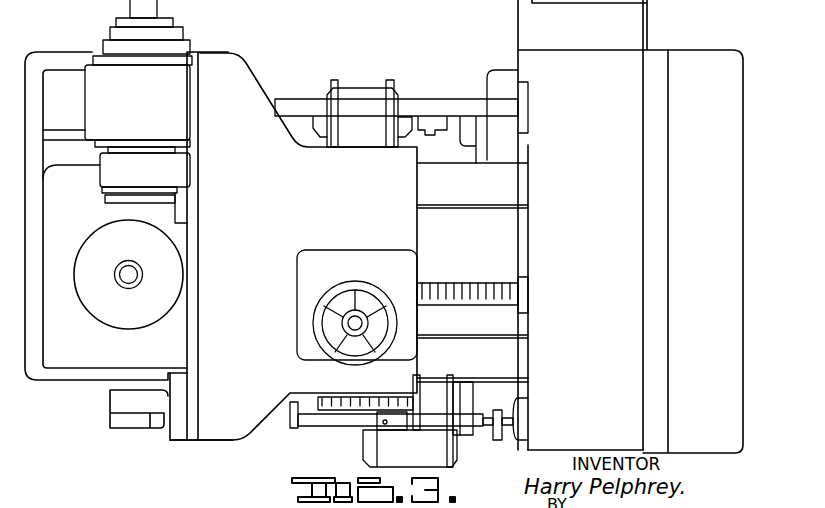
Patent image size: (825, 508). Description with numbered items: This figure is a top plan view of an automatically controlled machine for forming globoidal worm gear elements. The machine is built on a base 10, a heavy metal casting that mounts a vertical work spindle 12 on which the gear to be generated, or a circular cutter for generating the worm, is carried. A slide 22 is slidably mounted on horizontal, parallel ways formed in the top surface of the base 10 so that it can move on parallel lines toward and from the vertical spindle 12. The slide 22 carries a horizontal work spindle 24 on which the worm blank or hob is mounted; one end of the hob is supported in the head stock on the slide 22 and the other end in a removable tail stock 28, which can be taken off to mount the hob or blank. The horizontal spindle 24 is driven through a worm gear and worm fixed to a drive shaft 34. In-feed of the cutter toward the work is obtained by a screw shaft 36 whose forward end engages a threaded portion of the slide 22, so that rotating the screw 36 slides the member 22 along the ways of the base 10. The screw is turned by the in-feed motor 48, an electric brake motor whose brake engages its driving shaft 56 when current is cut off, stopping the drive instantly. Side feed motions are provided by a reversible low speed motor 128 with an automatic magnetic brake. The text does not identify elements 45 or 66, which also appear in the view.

The base 10 is at (60, 380).
The vertical work spindle 12 is at (105, 312).
The slide 22 is at (238, 77).
The horizontal work spindle 24 is at (158, 210).
The removable tail stock 28 is at (150, 413).
The drive shaft 34 is at (292, 98).
The screw shaft 36 is at (476, 283).
The motor 45 is at (448, 4).
The in-feed motor 48 is at (438, 456).
The driving shaft 56 is at (512, 440).
The scale 66 is at (318, 420).
The low speed motor 128 is at (360, 88).